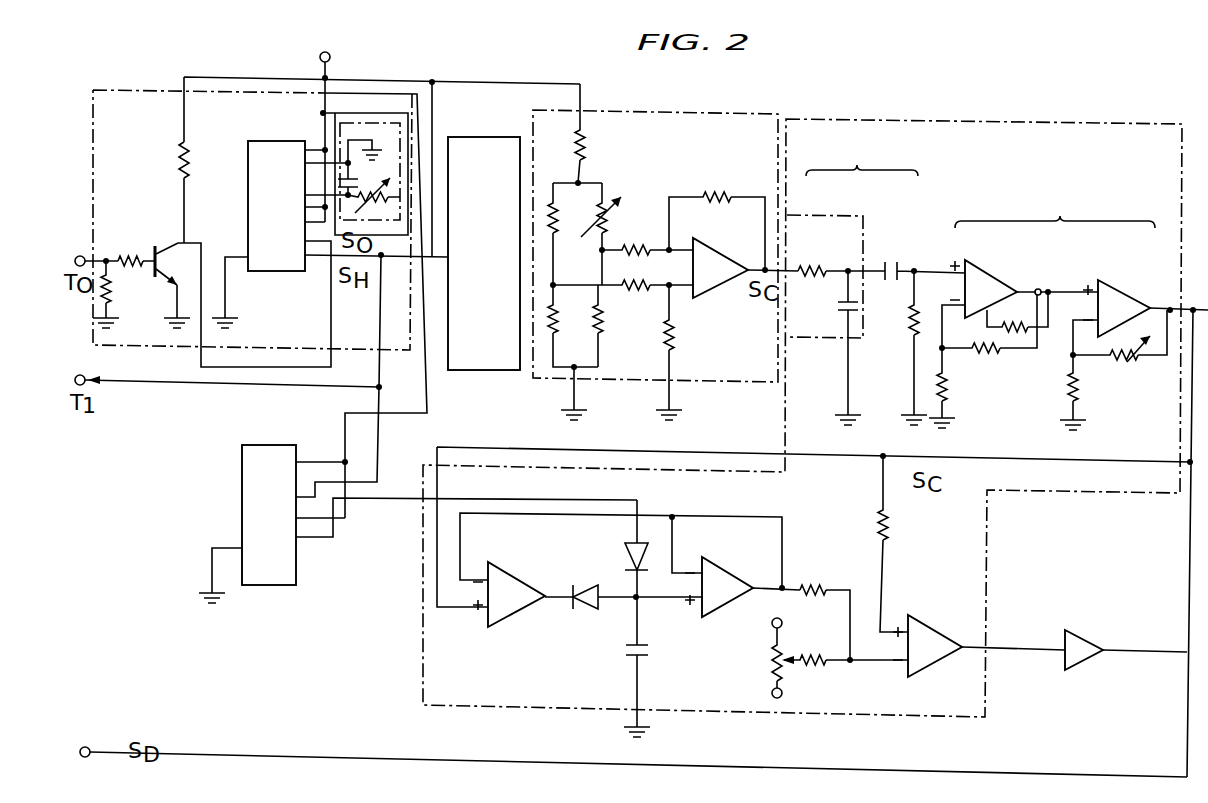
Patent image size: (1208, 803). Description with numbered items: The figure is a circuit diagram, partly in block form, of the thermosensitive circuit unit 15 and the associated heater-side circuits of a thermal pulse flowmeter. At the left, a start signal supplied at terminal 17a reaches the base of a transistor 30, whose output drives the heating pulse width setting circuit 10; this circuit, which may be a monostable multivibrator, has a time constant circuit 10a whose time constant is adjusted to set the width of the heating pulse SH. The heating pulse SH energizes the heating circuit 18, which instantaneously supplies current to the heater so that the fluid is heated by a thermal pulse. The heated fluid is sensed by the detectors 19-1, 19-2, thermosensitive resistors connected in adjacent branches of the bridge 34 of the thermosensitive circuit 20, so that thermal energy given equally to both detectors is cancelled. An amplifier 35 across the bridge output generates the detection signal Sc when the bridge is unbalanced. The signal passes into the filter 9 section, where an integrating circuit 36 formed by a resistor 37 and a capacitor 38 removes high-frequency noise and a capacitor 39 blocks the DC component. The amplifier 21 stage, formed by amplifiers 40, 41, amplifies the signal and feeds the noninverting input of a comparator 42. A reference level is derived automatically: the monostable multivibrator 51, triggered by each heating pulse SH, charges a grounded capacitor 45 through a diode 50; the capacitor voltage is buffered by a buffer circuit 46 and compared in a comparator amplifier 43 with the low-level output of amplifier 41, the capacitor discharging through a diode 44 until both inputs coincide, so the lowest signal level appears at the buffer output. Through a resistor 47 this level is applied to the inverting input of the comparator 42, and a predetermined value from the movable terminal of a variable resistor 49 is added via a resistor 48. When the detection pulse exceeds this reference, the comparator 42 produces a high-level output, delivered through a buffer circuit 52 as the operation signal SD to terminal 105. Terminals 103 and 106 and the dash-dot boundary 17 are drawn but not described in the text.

The power supply terminal 103 is at (330, 55).
The switching circuit 17 is at (173, 90).
The terminal 17a is at (77, 254).
The transistor 30 is at (151, 256).
The heating pulse width setting circuit 10 is at (292, 141).
The time constant circuit 10a is at (400, 220).
The heating circuit 18 is at (478, 137).
The thermosensitive circuit 20 is at (662, 112).
The bridge 34 is at (632, 166).
The amplifier 35 is at (736, 258).
The detector 19-1 is at (560, 308).
The detector 19-2 is at (603, 320).
The output terminal 106 is at (80, 375).
The monostable multivibrator 51 is at (262, 446).
The thermosensitive circuit unit 15 is at (1010, 122).
The filter 9 is at (862, 159).
The integrating circuit 36 is at (841, 216).
The resistor 37 is at (811, 265).
The capacitor 38 is at (838, 310).
The capacitor 39 is at (887, 262).
The amplifier 21 is at (1055, 210).
The amplifier 40 is at (998, 286).
The amplifier 41 is at (1120, 290).
The comparator amplifier 43 is at (515, 580).
The diode 44 is at (590, 612).
The capacitor 45 is at (650, 650).
The buffer circuit 46 is at (740, 584).
The resistor 47 is at (816, 580).
The resistor 48 is at (822, 672).
The variable resistor 49 is at (770, 670).
The diode 50 is at (625, 555).
The comparator 42 is at (945, 630).
The buffer circuit 52 is at (1086, 640).
The terminal 105 is at (89, 748).